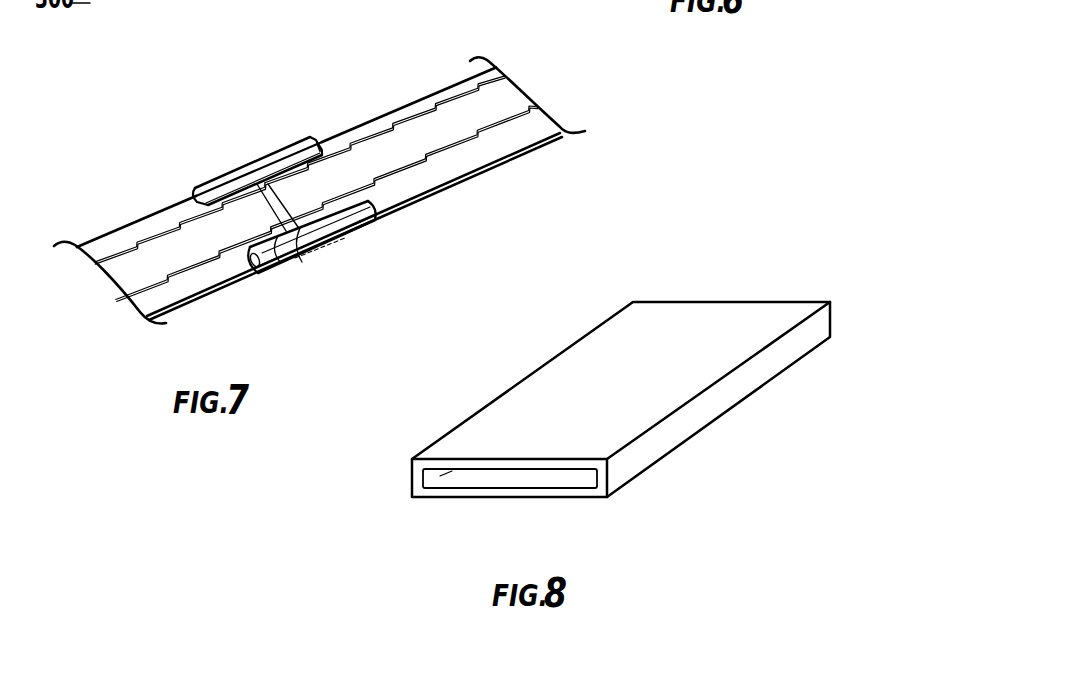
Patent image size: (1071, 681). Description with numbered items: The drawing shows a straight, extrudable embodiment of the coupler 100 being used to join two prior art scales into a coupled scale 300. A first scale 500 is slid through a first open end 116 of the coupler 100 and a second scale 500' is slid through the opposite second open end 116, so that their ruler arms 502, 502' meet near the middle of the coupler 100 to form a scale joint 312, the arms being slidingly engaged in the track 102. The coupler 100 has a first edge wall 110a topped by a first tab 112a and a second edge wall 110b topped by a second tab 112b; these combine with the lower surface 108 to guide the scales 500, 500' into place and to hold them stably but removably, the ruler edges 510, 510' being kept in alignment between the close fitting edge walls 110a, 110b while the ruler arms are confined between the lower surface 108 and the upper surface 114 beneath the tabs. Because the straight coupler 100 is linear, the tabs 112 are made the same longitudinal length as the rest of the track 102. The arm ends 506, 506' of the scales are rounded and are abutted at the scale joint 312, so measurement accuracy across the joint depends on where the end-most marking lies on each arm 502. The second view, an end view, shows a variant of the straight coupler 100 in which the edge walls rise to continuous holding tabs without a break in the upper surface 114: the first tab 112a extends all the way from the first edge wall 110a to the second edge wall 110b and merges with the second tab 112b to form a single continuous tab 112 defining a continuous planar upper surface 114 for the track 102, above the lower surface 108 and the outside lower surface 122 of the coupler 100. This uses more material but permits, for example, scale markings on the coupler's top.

In FIG. 7, the coupler 100 is at (278, 131).
In FIG. 8, the coupler 100 is at (496, 370).
In FIG. 7, the track 102 is at (299, 128).
In FIG. 8, the track 102 is at (459, 403).
In FIG. 8, the lower surface 108 is at (510, 479).
In FIG. 7, the first edge wall 110a is at (350, 243).
In FIG. 8, the first edge wall 110a is at (636, 457).
In FIG. 7, the second edge wall 110b is at (264, 153).
In FIG. 8, the second edge wall 110b is at (411, 482).
In FIG. 8, the tab 112 is at (608, 423).
In FIG. 7, the first tab 112a is at (374, 205).
In FIG. 7, the second tab 112b is at (227, 190).
In FIG. 8, the upper surface 114 is at (557, 471).
In FIG. 7, the open end 116 is at (326, 145).
In FIG. 8, the open end 116 is at (450, 476).
In FIG. 8, the outside lower surface 122 is at (468, 501).
In FIG. 7, the coupled scale 300 is at (243, 105).
In FIG. 7, the scale joint 312 is at (284, 198).
In FIG. 7, the first scale 500 is at (190, 281).
In FIG. 7, the second scale 500' is at (445, 114).
In FIG. 7, the ruler arm 502 is at (145, 250).
In FIG. 7, the ruler arm 502' is at (445, 142).
In FIG. 7, the arm end 506 is at (285, 277).
In FIG. 7, the arm end 506' is at (327, 269).
In FIG. 7, the ruler edge 510 is at (203, 282).
In FIG. 7, the ruler edge 510' is at (467, 113).